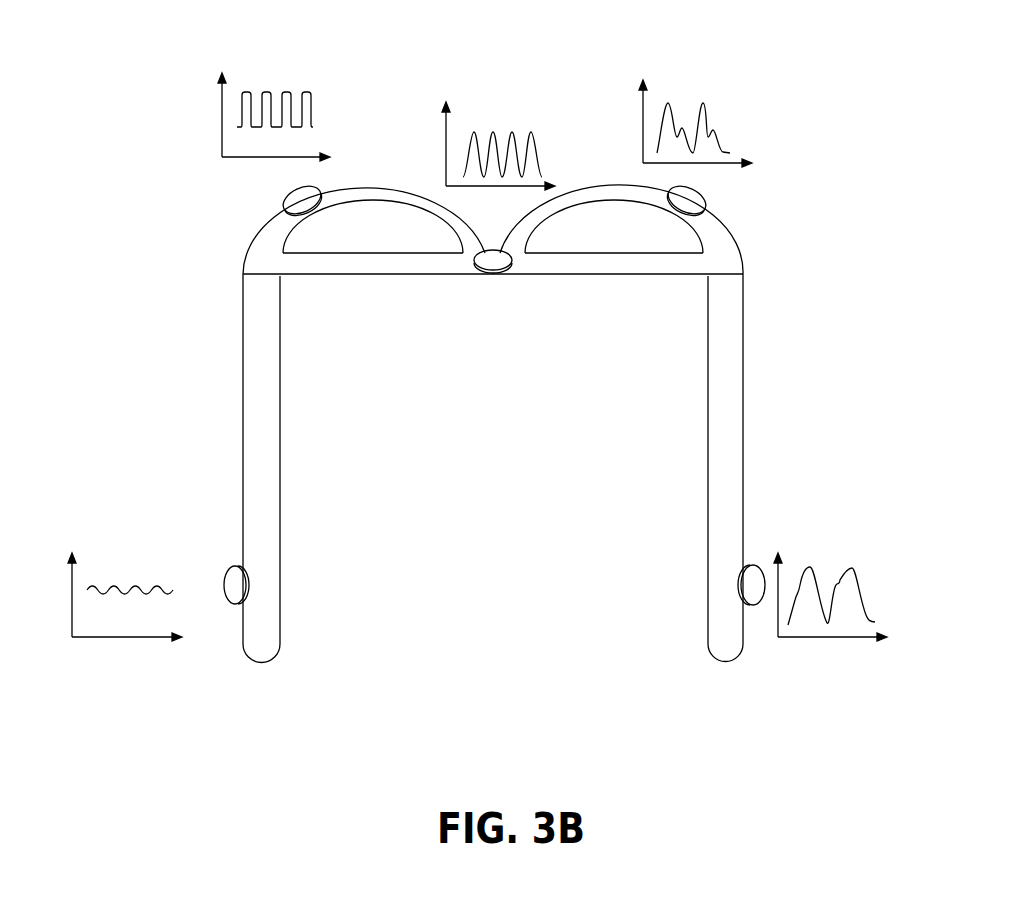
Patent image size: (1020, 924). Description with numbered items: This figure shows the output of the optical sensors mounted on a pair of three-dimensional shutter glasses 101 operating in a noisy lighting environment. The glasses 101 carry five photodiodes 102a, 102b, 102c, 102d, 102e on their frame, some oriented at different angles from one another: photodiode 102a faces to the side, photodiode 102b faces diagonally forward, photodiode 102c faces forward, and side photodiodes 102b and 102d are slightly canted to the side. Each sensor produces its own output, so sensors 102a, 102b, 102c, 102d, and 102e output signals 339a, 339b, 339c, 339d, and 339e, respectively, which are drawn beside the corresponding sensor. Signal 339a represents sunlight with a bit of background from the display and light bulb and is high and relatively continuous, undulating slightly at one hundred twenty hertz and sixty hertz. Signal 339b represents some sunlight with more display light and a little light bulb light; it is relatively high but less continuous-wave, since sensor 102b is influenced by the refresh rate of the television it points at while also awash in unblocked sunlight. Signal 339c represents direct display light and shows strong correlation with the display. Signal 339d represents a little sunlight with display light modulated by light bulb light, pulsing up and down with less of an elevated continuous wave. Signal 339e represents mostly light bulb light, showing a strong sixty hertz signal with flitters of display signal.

The 3D glasses 101 is at (280, 637).
The photodiode 102a is at (233, 565).
The photodiode 102b is at (285, 195).
The photodiode 102c is at (482, 273).
The photodiode 102d is at (703, 195).
The photodiode 102e is at (752, 570).
The signal 339a is at (120, 575).
The signal 339b is at (303, 92).
The signal 339c is at (537, 138).
The signal 339d is at (727, 123).
The signal 339e is at (860, 583).